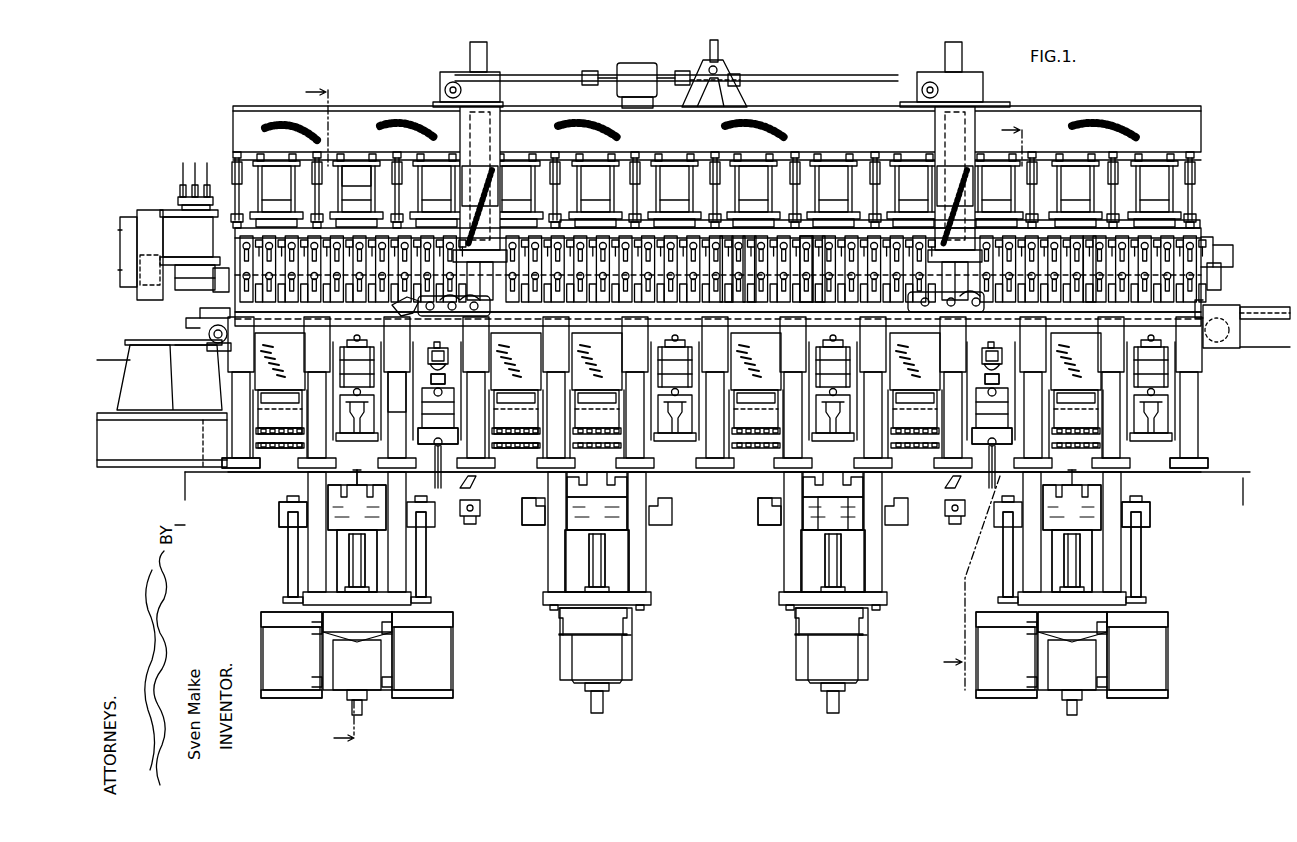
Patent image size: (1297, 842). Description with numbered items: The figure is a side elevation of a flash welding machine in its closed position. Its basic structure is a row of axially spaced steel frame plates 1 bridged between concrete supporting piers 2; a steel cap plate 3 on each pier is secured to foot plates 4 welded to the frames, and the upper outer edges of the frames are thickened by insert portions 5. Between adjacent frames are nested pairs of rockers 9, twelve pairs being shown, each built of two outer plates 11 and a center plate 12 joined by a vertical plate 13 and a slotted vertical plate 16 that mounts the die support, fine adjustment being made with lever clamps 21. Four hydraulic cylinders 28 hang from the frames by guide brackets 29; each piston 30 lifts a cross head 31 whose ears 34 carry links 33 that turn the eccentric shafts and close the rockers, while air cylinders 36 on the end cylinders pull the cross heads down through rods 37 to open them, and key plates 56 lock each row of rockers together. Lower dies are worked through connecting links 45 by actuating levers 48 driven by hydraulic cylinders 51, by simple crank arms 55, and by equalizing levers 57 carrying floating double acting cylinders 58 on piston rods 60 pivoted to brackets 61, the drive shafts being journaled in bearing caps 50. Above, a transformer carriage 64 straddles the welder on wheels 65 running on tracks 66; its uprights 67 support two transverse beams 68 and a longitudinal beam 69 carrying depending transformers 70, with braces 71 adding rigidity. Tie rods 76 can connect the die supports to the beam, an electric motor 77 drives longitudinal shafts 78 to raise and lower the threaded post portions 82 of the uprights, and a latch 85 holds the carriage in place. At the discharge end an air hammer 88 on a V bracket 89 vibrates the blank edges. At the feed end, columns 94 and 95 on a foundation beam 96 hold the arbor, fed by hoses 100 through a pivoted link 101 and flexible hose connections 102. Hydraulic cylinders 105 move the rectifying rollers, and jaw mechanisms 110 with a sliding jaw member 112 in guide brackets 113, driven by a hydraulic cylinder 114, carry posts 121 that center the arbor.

The frame plate 1 is at (237, 432).
The supporting pier 2 is at (1250, 490).
The cap plate 3 is at (210, 488).
The foot plate 4 is at (237, 475).
The insert portion 5 is at (301, 344).
The rocker 9 is at (348, 250).
The outer plate 11 is at (727, 246).
The center plate 12 is at (752, 246).
The vertical plate 13 is at (1198, 380).
The vertical plate 16 is at (822, 256).
The lever clamp 21 is at (356, 180).
The hydraulic cylinder 28 is at (364, 665).
The guide bracket 29 is at (400, 562).
The piston 30 is at (368, 575).
The cross head 31 is at (285, 513).
The link 33 is at (820, 476).
The ear 34 is at (833, 513).
The air cylinder 36 is at (440, 662).
The rod 37 is at (288, 572).
The connecting link 45 is at (517, 400).
The actuating lever 48 is at (380, 398).
The bearing cap 50 is at (353, 472).
The hydraulic cylinder 51 is at (352, 360).
The crank arm 55 is at (277, 449).
The key plate 56 is at (630, 226).
The equalizing lever 57 is at (432, 460).
The double acting cylinder 58 is at (441, 462).
The piston rod 60 is at (436, 379).
The bracket 61 is at (442, 357).
The transformer carriage 64 is at (403, 100).
The wheel 65 is at (688, 319).
The track 66 is at (873, 392).
The upright 67 is at (931, 187).
The transverse beam 68 is at (500, 132).
The longitudinal beam 69 is at (878, 99).
The transformer 70 is at (358, 165).
The brace 71 is at (715, 392).
The tie rod 76 is at (236, 186).
The electric motor 77 is at (637, 63).
The longitudinal shaft 78 is at (790, 76).
The post portion 82 is at (482, 262).
The latch 85 is at (397, 392).
The air hammer 88 is at (1204, 238).
The V bracket 89 is at (1214, 251).
The column 94 is at (210, 224).
The column 95 is at (144, 326).
The foundation beam 96 is at (146, 460).
The hose 100 is at (196, 186).
The pivoted link 101 is at (159, 375).
The flexible hose connection 102 is at (196, 274).
The hydraulic cylinder 105 is at (472, 514).
The jaw mechanism 110 is at (214, 345).
The right sliding jaw member 112 is at (716, 308).
The guide bracket 113 is at (716, 291).
The hydraulic cylinder 114 is at (208, 348).
The post 121 is at (220, 268).